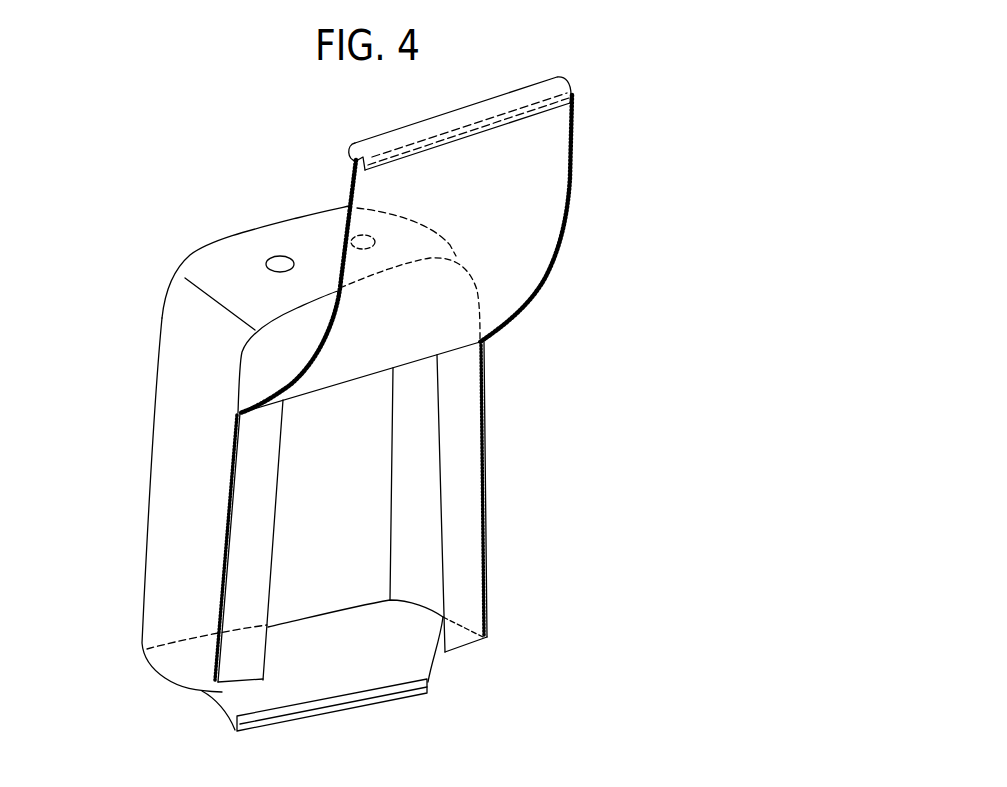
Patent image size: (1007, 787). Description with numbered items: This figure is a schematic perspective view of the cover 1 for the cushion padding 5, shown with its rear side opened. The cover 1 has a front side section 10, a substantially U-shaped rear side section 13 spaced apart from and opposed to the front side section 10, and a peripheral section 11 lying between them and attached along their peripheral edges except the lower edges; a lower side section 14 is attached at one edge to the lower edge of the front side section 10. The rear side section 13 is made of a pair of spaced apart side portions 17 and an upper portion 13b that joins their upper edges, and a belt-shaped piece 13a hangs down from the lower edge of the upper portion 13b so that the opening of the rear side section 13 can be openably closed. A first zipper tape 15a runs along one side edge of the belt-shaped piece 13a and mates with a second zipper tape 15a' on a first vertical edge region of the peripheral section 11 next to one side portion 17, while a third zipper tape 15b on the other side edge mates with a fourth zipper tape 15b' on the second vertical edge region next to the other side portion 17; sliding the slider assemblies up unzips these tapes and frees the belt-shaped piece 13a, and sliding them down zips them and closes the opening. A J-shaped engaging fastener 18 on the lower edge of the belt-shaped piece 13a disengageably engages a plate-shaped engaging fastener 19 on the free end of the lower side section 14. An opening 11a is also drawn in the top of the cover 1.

The cover 1 is at (198, 230).
The peripheral section 11 is at (242, 240).
The stay insertion hole 11a is at (281, 258).
The rear side section 13 is at (578, 242).
The belt-shaped piece 13a is at (517, 263).
The upper portion 13b is at (258, 367).
The first zipper tape 15a is at (298, 249).
The third zipper tape 15b is at (591, 218).
The second zipper tape 15a' is at (150, 547).
The fourth zipper tape 15b' is at (564, 489).
The side portions 17 is at (463, 405).
The engaging fastener 18 is at (527, 120).
The engaging fastener 19 is at (357, 690).
The lower side section 14 is at (293, 693).
The front side section 10 is at (343, 494).
The padding 5 is at (348, 706).